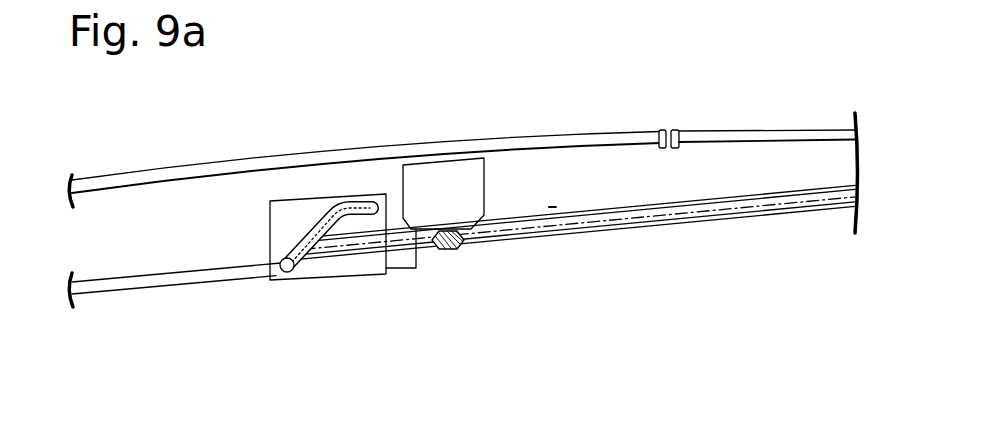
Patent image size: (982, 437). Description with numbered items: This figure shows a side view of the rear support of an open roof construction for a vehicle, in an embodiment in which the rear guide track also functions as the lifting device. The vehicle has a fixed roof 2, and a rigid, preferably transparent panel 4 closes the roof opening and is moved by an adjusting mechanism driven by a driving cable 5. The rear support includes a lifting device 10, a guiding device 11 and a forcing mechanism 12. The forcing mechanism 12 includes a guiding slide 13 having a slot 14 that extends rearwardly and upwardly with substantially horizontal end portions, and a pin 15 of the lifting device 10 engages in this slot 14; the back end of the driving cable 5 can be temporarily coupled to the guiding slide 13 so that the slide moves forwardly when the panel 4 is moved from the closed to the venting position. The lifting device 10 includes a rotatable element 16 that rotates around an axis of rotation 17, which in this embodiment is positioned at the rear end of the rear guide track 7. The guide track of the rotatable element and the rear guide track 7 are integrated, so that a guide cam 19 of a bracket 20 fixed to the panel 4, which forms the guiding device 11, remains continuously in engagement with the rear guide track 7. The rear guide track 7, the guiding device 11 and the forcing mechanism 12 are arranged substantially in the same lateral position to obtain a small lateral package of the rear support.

The fixed roof 2 is at (718, 141).
The panel 4 is at (248, 160).
The driving cable 5 is at (172, 290).
The rear guide track 7 is at (728, 212).
The lifting device 10 is at (487, 271).
The guiding device 11 is at (455, 146).
The forcing mechanism 12 is at (256, 291).
The guiding slide 13 is at (378, 222).
The slot 14 is at (333, 240).
The pin 15 is at (291, 276).
The rotatable element 16 is at (600, 232).
The axis of rotation 17 is at (849, 217).
The guide cam 19 is at (448, 228).
The bracket 20 is at (473, 190).